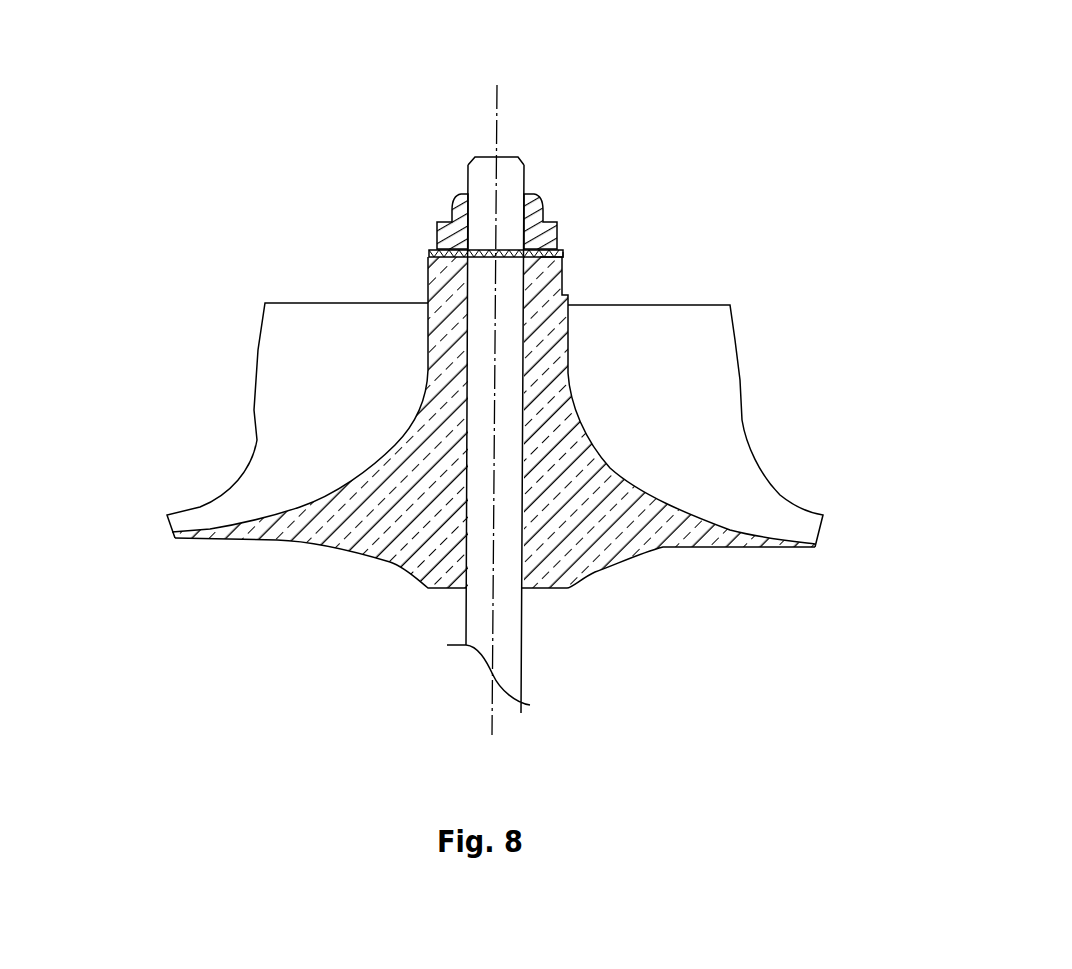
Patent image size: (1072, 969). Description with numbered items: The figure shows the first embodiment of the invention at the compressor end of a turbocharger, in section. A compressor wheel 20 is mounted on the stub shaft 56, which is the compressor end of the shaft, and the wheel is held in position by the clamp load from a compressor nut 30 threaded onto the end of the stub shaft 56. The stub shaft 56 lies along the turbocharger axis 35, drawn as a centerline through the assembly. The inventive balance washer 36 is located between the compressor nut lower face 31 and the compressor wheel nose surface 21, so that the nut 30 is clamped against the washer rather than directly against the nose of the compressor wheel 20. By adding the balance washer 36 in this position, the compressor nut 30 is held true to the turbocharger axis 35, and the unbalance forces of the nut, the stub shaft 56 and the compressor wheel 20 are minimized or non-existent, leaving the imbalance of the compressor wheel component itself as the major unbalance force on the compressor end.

The compressor wheel 20 is at (564, 422).
The compressor wheel nose surface 21 is at (427, 302).
The compressor nut 30 is at (437, 223).
The compressor nut lower face 31 is at (428, 256).
The turbocharger axis 35 is at (497, 115).
The balance washer 36 is at (563, 253).
The stub shaft 56 is at (512, 633).